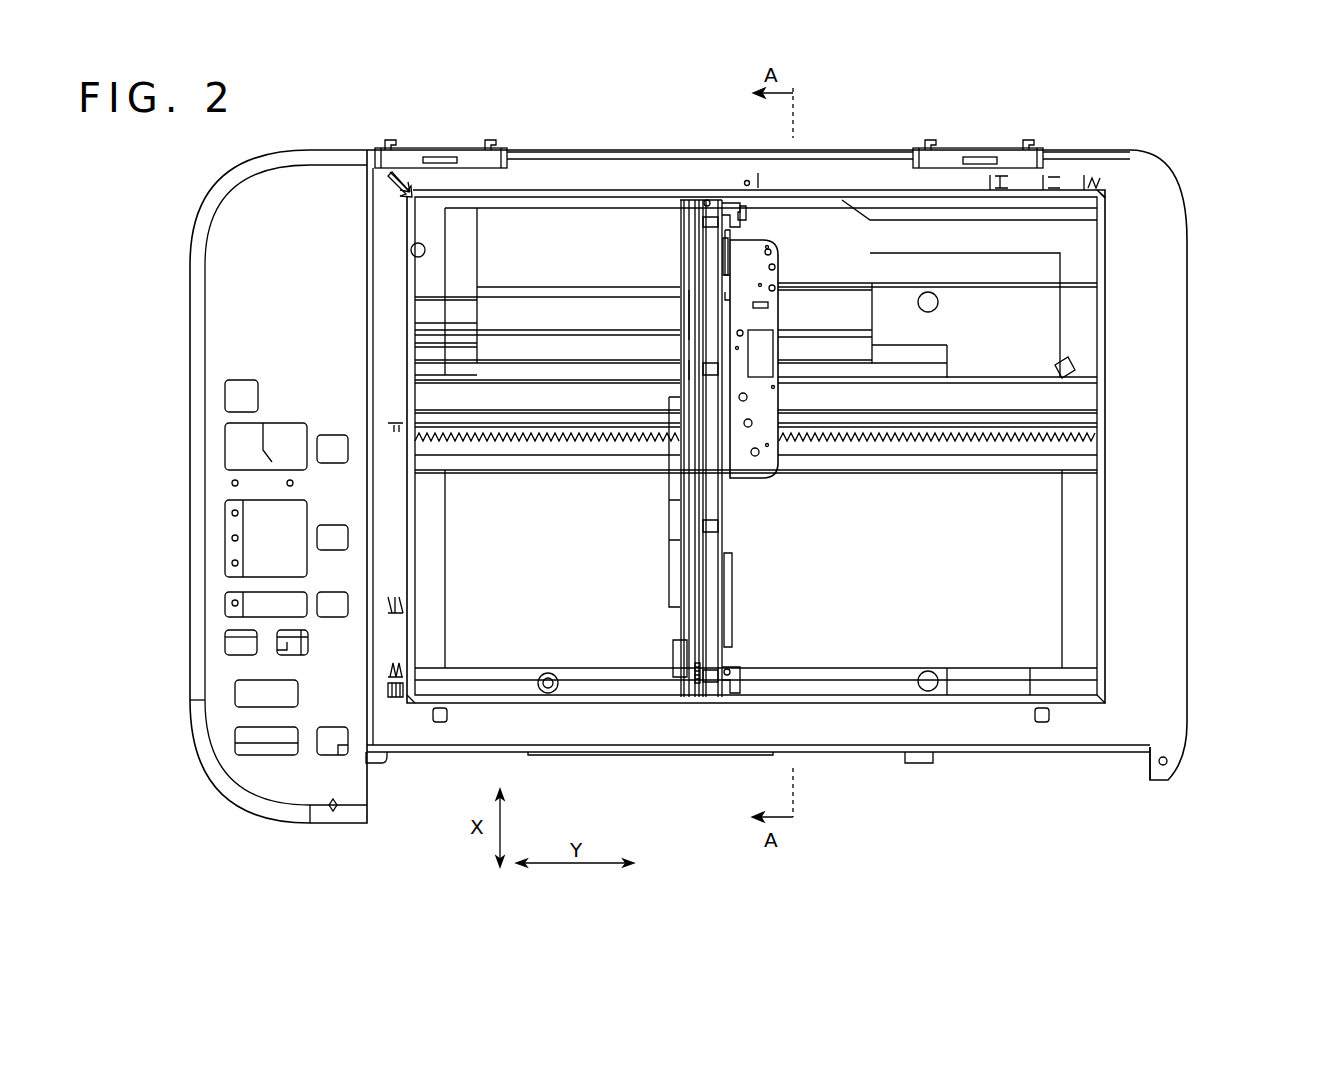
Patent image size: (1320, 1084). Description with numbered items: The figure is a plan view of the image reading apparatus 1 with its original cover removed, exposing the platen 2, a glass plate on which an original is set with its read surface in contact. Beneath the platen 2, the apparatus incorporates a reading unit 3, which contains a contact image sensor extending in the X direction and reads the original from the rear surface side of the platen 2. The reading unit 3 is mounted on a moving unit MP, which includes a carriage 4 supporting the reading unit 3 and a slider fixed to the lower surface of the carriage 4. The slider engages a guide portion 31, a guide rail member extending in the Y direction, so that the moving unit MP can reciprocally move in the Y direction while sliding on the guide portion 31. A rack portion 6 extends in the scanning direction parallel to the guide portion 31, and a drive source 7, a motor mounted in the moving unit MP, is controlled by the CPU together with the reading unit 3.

The image reading apparatus 1 is at (1214, 273).
The platen 2 is at (1042, 577).
The reading unit 3 is at (698, 662).
The carriage 4 is at (756, 248).
The rack portion 6 is at (1072, 436).
The drive source 7 is at (776, 344).
The guide portion 31 is at (1063, 418).
The moving unit MP is at (763, 495).